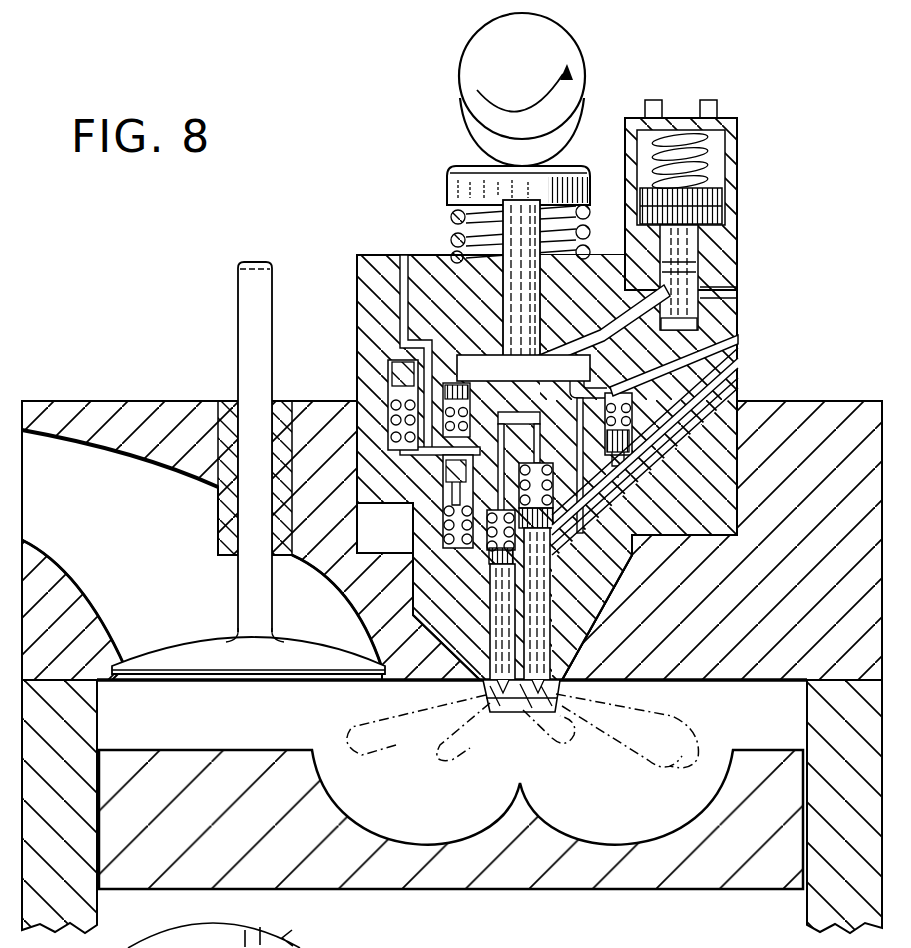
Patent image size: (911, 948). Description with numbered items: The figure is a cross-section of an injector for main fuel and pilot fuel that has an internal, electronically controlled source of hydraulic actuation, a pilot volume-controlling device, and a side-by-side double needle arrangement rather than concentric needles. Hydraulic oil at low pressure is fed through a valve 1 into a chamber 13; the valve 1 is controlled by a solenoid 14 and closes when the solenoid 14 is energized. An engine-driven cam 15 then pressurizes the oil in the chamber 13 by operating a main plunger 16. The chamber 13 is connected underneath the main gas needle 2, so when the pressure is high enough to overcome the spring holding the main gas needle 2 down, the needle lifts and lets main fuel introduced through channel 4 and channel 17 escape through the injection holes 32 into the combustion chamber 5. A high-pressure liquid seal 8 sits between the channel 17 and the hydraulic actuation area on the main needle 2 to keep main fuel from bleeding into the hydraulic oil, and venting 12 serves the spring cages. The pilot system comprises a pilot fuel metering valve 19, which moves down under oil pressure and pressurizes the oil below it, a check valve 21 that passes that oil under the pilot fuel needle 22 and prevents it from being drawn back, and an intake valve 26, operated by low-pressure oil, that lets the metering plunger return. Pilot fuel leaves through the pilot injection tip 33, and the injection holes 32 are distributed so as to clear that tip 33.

The valve 1 is at (695, 262).
The main gas needle 2 is at (550, 652).
The channel 4 is at (739, 393).
The combustion chamber 5 is at (636, 816).
The seal 8 is at (604, 574).
The venting 12 is at (738, 360).
The chamber 13 is at (593, 329).
The solenoid 14 is at (738, 157).
The engine-driven cam 15 is at (542, 48).
The main plunger 16 is at (518, 206).
The channel 17 is at (555, 634).
The pilot fuel metering valve 19 is at (440, 406).
The check valve 21 is at (437, 511).
The pilot fuel needle 22 is at (492, 614).
The intake valve 26 is at (388, 382).
The injection holes 32 is at (560, 690).
The pilot injection tip 33 is at (499, 728).